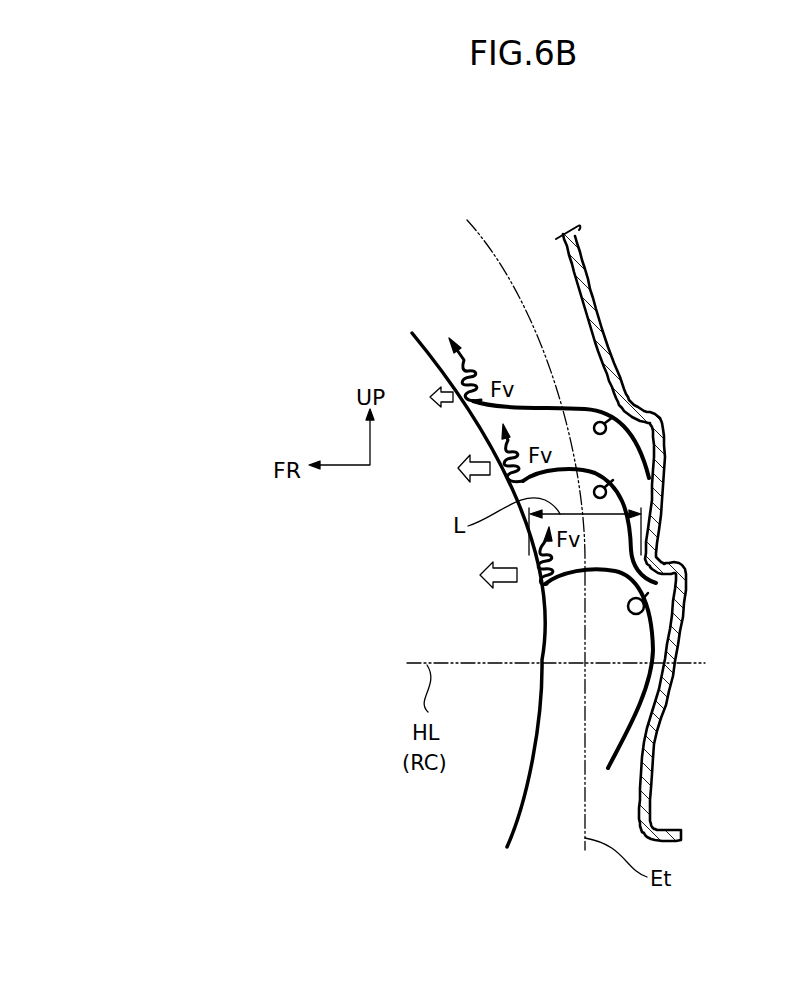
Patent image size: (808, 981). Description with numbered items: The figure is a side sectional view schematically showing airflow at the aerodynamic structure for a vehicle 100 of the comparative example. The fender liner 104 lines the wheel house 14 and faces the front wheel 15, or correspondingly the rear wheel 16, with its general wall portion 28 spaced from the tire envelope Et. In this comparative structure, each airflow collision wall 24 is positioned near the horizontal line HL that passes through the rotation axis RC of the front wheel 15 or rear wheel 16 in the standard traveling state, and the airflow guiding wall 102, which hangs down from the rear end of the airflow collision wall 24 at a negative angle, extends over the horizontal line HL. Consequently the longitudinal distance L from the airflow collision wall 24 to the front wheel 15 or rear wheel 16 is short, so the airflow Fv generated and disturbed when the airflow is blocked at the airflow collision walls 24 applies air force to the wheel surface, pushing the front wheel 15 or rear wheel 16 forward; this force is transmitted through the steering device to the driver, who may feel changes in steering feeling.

The wheel house 14 is at (501, 323).
The front wheel 15 is at (512, 625).
The rear wheel 16 is at (500, 828).
The airflow collision wall 24 is at (647, 412).
The general wall portion 28 is at (643, 793).
The aerodynamic structure for a vehicle 100 is at (666, 273).
The airflow guiding wall 102 is at (665, 466).
The fender liner 104 is at (592, 263).